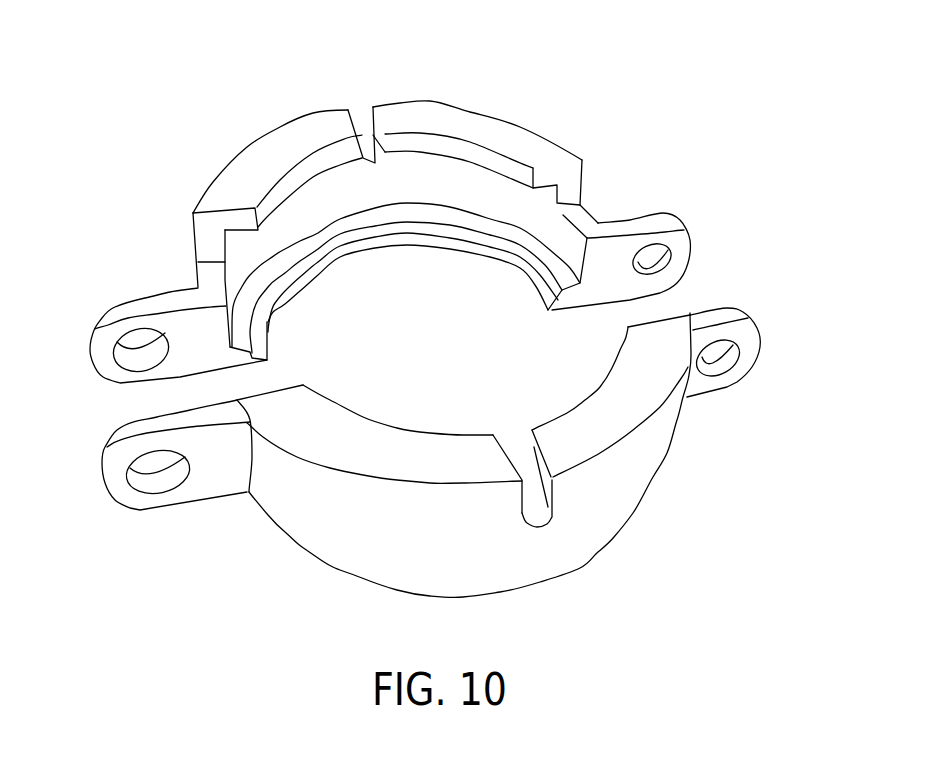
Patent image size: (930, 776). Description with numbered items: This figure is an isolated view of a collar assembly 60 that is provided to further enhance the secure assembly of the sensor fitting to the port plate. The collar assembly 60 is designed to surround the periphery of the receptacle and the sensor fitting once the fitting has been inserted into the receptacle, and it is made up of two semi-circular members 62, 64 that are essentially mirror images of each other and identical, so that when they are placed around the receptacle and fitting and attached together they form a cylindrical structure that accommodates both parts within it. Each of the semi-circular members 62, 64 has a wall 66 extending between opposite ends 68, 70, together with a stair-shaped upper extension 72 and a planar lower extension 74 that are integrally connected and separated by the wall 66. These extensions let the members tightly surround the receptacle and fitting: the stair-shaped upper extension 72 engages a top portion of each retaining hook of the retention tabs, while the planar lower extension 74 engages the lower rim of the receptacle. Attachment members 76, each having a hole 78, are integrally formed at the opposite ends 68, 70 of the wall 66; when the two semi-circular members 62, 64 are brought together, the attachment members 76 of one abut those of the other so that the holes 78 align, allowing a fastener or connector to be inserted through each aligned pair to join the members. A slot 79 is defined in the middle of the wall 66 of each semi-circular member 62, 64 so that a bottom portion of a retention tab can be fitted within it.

The collar assembly 60 is at (527, 77).
The semi-circular member 62 is at (312, 183).
The semi-circular member 64 is at (350, 552).
The wall 66 is at (460, 177).
The end 68 is at (205, 232).
The end 70 is at (583, 177).
The stair-shaped upper extension 72 is at (428, 245).
The planar lower extension 74 is at (423, 117).
The attachment member 76 is at (95, 368).
The hole 78 is at (138, 340).
The slot 79 is at (362, 117).